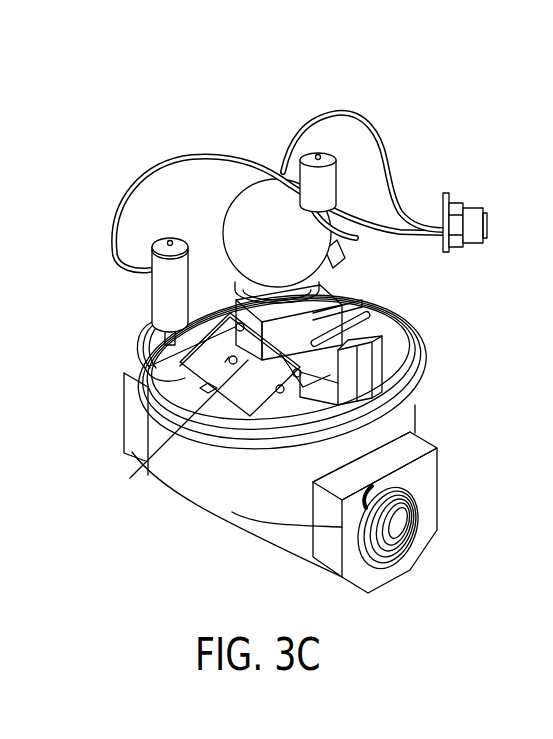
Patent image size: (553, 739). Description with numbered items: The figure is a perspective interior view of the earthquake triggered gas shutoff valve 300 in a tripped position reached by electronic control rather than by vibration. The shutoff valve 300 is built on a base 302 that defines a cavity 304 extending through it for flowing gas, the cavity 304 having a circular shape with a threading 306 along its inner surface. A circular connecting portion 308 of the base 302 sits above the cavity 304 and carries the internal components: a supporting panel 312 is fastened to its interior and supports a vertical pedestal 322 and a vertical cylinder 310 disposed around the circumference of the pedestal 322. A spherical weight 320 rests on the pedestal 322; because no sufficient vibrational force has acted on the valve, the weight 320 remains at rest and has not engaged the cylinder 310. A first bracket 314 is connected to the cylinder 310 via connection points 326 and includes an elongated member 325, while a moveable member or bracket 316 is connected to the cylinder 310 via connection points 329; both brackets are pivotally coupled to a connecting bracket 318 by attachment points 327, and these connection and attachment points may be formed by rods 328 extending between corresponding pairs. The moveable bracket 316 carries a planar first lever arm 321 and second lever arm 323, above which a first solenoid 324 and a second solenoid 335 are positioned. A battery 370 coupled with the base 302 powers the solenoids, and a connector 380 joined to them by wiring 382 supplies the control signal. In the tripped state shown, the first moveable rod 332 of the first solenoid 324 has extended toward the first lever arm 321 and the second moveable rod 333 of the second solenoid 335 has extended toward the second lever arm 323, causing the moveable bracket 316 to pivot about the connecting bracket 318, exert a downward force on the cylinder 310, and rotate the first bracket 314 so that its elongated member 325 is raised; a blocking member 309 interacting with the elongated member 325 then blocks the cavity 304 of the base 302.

The shutoff valve 300 is at (158, 138).
The base 302 is at (426, 468).
The cavity 304 is at (362, 566).
The threading 306 is at (398, 544).
The connecting portion 308 is at (428, 368).
The blocking member 309 is at (290, 547).
The vertical cylinder 310 is at (316, 310).
The supporting panel 312 is at (167, 348).
The first bracket 314 is at (348, 311).
The moveable member or bracket 316 is at (210, 383).
The connecting bracket 318 is at (293, 397).
The weight 320 is at (250, 202).
The first lever arm 321 is at (333, 257).
The vertical pedestal 322 is at (256, 278).
The second lever arm 323 is at (147, 320).
The first solenoid 324 is at (341, 152).
The elongated member 325 is at (362, 357).
The connection points 326 is at (233, 323).
The attachment points 327 is at (276, 391).
The rods 328 is at (372, 313).
The connection points 329 is at (233, 364).
The first moveable rod 332 is at (320, 155).
The second moveable rod 333 is at (170, 242).
The second solenoid 335 is at (147, 249).
The battery 370 is at (182, 432).
The connector 380 is at (474, 214).
The wiring 382 is at (412, 218).